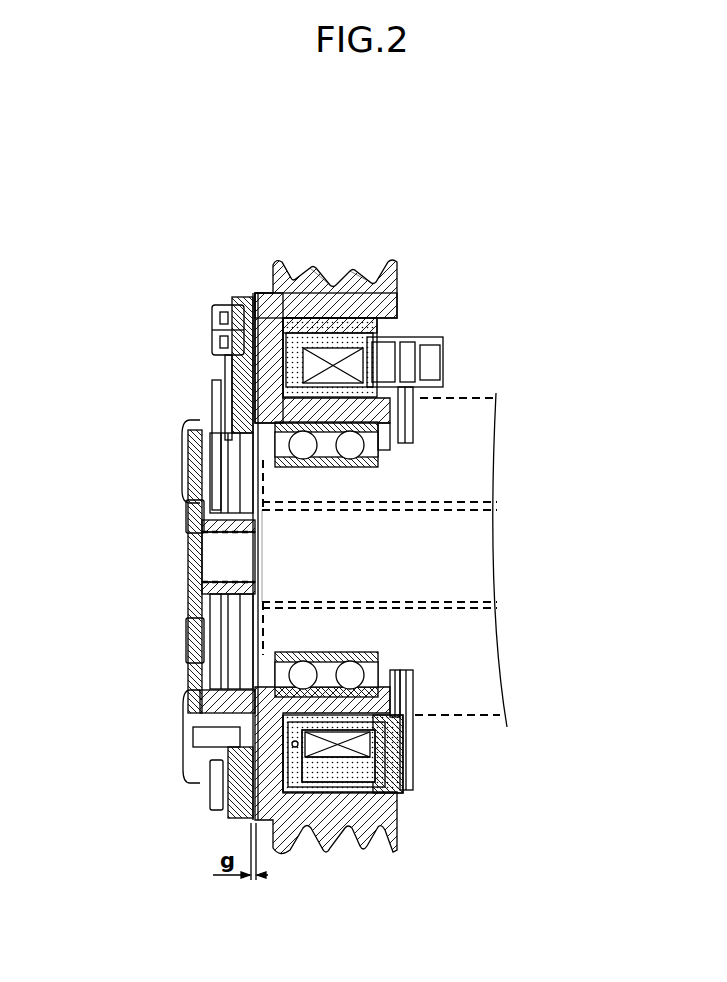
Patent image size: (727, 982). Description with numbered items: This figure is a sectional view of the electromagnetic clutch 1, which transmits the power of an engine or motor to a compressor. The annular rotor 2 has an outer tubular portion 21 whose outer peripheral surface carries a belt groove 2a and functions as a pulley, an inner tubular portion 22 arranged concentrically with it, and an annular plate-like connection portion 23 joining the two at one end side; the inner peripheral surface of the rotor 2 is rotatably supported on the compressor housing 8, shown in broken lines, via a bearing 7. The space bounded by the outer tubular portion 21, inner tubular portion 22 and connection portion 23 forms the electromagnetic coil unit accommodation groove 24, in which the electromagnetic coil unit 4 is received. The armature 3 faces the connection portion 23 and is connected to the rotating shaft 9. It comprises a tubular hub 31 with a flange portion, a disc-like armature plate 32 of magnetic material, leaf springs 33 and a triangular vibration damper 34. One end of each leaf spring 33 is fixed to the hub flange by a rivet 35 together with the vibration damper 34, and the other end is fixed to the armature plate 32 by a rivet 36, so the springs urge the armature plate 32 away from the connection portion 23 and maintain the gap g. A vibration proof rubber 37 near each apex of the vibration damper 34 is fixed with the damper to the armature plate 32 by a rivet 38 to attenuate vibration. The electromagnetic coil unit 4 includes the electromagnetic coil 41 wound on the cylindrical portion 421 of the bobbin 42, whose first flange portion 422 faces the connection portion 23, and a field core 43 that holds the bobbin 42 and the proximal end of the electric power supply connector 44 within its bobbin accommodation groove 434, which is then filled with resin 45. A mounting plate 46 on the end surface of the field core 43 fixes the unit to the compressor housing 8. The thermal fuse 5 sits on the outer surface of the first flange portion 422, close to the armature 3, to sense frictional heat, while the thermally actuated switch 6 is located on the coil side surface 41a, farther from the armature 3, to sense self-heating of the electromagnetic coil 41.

The electromagnetic clutch 1 is at (120, 205).
The rotor 2 is at (412, 252).
The belt groove 2a is at (340, 280).
The outer tubular portion 21 is at (385, 292).
The inner tubular portion 22 is at (380, 412).
The connection portion 23 is at (253, 297).
The electromagnetic coil unit accommodation groove 24 is at (382, 335).
The armature 3 is at (160, 772).
The hub 31 is at (200, 593).
The armature plate 32 is at (243, 818).
The leaf spring 33 is at (220, 362).
The vibration damper 34 is at (213, 407).
The rivet 35 is at (187, 545).
The rivet 36 is at (213, 323).
The vibration proof rubber 37 is at (202, 777).
The rivet 38 is at (182, 465).
The electromagnetic coil unit 4 is at (490, 338).
The electromagnetic coil 41 is at (358, 790).
The coil side surface 41a is at (334, 765).
The bobbin 42 is at (410, 747).
The cylindrical portion 421 is at (347, 708).
The first flange portion 422 is at (300, 767).
The field core 43 is at (413, 758).
The bobbin accommodation groove 434 is at (332, 352).
The electric power supply connector 44 is at (443, 360).
The resin 45 is at (365, 775).
The mounting plate 46 is at (413, 701).
The thermal fuse 5 is at (295, 742).
The thermally actuated switch 6 is at (352, 770).
The bearing 7 is at (385, 462).
The compressor housing 8 is at (490, 673).
The rotating shaft 9 is at (485, 563).